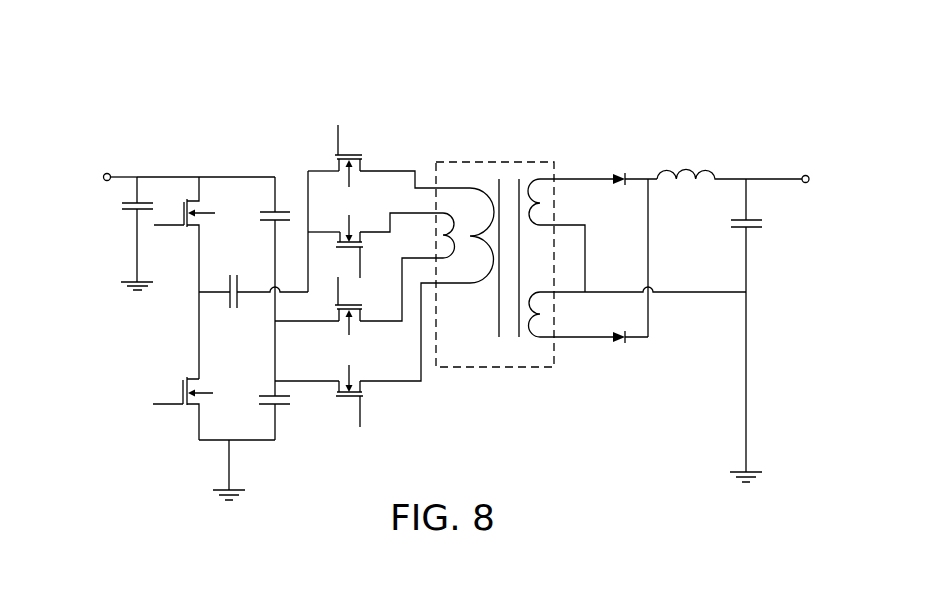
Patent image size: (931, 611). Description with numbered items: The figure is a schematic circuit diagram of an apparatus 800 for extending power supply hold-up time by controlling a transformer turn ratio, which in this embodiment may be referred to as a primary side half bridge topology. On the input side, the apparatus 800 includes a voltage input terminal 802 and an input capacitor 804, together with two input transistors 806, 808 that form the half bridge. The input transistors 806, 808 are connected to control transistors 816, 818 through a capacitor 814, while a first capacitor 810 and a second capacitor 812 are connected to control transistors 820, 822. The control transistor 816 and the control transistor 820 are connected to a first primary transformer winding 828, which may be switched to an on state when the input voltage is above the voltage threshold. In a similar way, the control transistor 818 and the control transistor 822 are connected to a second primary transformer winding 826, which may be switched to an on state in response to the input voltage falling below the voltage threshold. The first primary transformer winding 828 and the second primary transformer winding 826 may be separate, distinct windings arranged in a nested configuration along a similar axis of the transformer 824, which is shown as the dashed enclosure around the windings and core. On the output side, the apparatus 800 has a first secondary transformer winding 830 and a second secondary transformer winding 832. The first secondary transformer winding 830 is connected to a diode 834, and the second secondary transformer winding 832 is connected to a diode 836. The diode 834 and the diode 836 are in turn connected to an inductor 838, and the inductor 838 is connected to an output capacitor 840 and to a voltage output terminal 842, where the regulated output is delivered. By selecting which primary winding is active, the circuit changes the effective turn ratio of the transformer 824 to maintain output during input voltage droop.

The apparatus 800 is at (88, 90).
The voltage input terminal 802 is at (104, 180).
The input capacitor 804 is at (123, 212).
The input transistor 806 is at (195, 200).
The input transistor 808 is at (186, 406).
The first capacitor 810 is at (262, 210).
The second capacitor 812 is at (290, 404).
The capacitor 814 is at (233, 308).
The control transistor 816 is at (365, 153).
The control transistor 818 is at (365, 243).
The control transistor 820 is at (362, 397).
The control transistor 822 is at (350, 328).
The transformer 824 is at (493, 368).
The second primary transformer winding 826 is at (471, 186).
The first primary transformer winding 828 is at (470, 286).
The first secondary transformer winding 830 is at (542, 178).
The second secondary transformer winding 832 is at (541, 340).
The diode 834 is at (612, 178).
The diode 836 is at (618, 342).
The inductor 838 is at (700, 171).
The output capacitor 840 is at (763, 227).
The voltage output terminal 842 is at (806, 183).